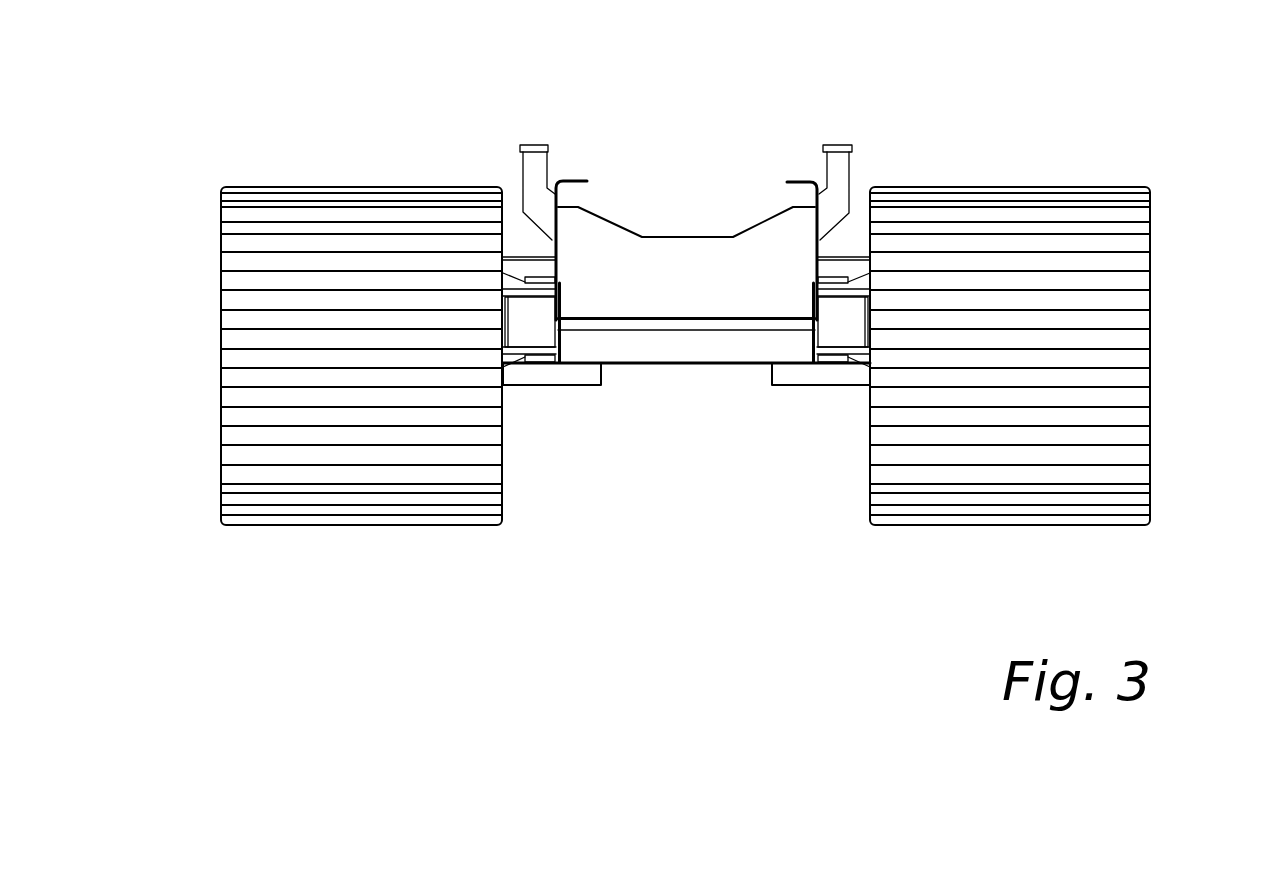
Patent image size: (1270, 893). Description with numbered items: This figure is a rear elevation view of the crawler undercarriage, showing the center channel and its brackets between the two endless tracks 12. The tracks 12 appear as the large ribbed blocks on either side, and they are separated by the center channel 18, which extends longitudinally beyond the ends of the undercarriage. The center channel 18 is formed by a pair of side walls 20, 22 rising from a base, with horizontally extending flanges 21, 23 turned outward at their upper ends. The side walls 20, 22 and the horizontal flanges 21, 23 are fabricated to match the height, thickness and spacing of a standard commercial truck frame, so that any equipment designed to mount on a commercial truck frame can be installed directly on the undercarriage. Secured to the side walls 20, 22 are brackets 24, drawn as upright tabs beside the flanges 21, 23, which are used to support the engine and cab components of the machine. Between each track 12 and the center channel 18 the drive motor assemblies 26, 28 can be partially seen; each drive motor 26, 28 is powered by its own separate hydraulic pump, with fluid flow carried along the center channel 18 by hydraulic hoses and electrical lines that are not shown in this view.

The endless tracks 12 is at (284, 187).
The center channel 18 is at (688, 355).
The side wall 20 is at (558, 227).
The horizontally extending flange 21 is at (573, 180).
The side wall 22 is at (813, 250).
The horizontally extending flange 23 is at (797, 181).
The brackets 24 is at (528, 145).
The drive motor assembly 26 is at (540, 345).
The drive motor assembly 28 is at (833, 337).